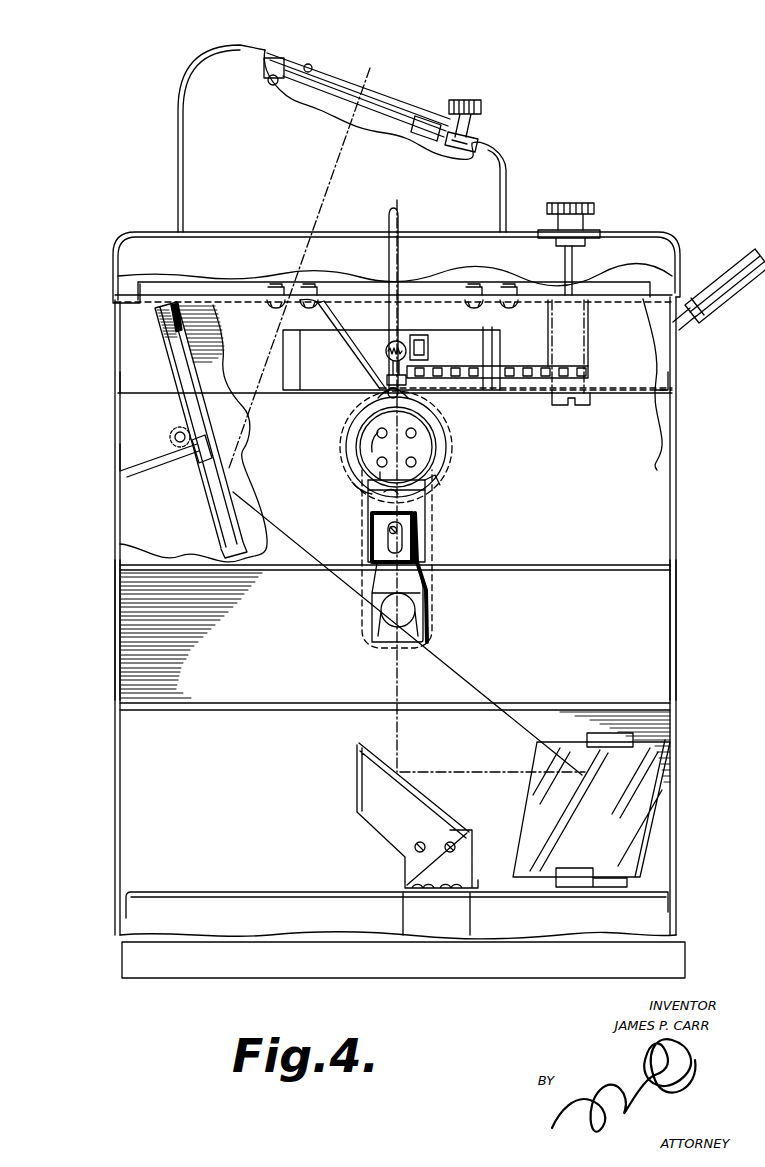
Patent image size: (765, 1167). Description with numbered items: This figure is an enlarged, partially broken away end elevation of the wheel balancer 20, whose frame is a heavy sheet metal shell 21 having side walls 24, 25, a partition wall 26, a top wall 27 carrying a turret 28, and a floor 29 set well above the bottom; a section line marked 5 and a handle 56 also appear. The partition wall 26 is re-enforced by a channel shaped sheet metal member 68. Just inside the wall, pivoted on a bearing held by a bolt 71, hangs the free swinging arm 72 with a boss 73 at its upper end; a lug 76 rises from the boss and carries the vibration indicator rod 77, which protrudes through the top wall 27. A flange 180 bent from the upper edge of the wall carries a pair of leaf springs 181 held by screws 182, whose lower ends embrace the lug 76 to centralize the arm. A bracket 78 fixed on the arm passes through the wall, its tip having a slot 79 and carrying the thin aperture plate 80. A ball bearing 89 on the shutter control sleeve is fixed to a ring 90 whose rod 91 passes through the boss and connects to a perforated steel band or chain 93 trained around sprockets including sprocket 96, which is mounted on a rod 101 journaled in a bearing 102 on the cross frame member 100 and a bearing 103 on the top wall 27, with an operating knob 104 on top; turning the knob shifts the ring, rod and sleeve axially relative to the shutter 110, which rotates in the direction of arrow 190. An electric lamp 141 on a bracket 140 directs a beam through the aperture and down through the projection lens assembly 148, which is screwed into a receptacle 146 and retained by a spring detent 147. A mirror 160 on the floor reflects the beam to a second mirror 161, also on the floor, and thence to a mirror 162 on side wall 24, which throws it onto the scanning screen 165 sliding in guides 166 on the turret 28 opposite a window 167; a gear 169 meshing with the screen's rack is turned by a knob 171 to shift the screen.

The section line 5- 5 is at (403, 683).
The wheel balancer 20 is at (632, 108).
The sheet metal shell 21 is at (684, 525).
The side wall 24 is at (118, 633).
The side wall 25 is at (682, 619).
The partition wall 26 is at (270, 728).
The top wall 27 is at (655, 234).
The turret 28 is at (505, 158).
The floor 29 is at (537, 890).
The handle 56 is at (710, 304).
The channel shaped sheet metal member 68 is at (147, 678).
The bolt 71 is at (428, 628).
The free swinging arm 72 is at (434, 526).
The boss 73 is at (441, 480).
The lug 76 is at (387, 372).
The vibration indicator rod 77 is at (400, 213).
The bracket 78 is at (417, 502).
The slot 79 is at (383, 494).
The aperture plate 80 is at (428, 474).
The ball bearing 89 is at (361, 444).
The ring 90 is at (433, 418).
The rod 91 is at (369, 401).
The perforated steel band or chain 93 is at (527, 367).
The sprocket 96 is at (588, 366).
The cross frame member 100 is at (628, 387).
The rod 101 is at (573, 264).
The bearing 102 is at (586, 404).
The bearing 103 is at (588, 232).
The operating knob 104 is at (570, 205).
The shutter 110 is at (422, 445).
The bracket 140 is at (300, 349).
The electric lamp 141 is at (384, 350).
The receptacle 146 is at (376, 527).
The spring detent 147 is at (405, 545).
The projection lens assembly 148 is at (425, 582).
The mirror 160 is at (390, 768).
The mirror 161 is at (653, 769).
The mirror 162 is at (233, 500).
The scanning screen 165 is at (353, 103).
The guides 166 is at (441, 127).
The window 167 is at (322, 70).
The gear 169 is at (479, 137).
The knob 171 is at (470, 104).
The flange 180 is at (588, 303).
The leaf springs 181 is at (460, 301).
The screws 182 is at (483, 303).
The arrow 190 is at (375, 450).